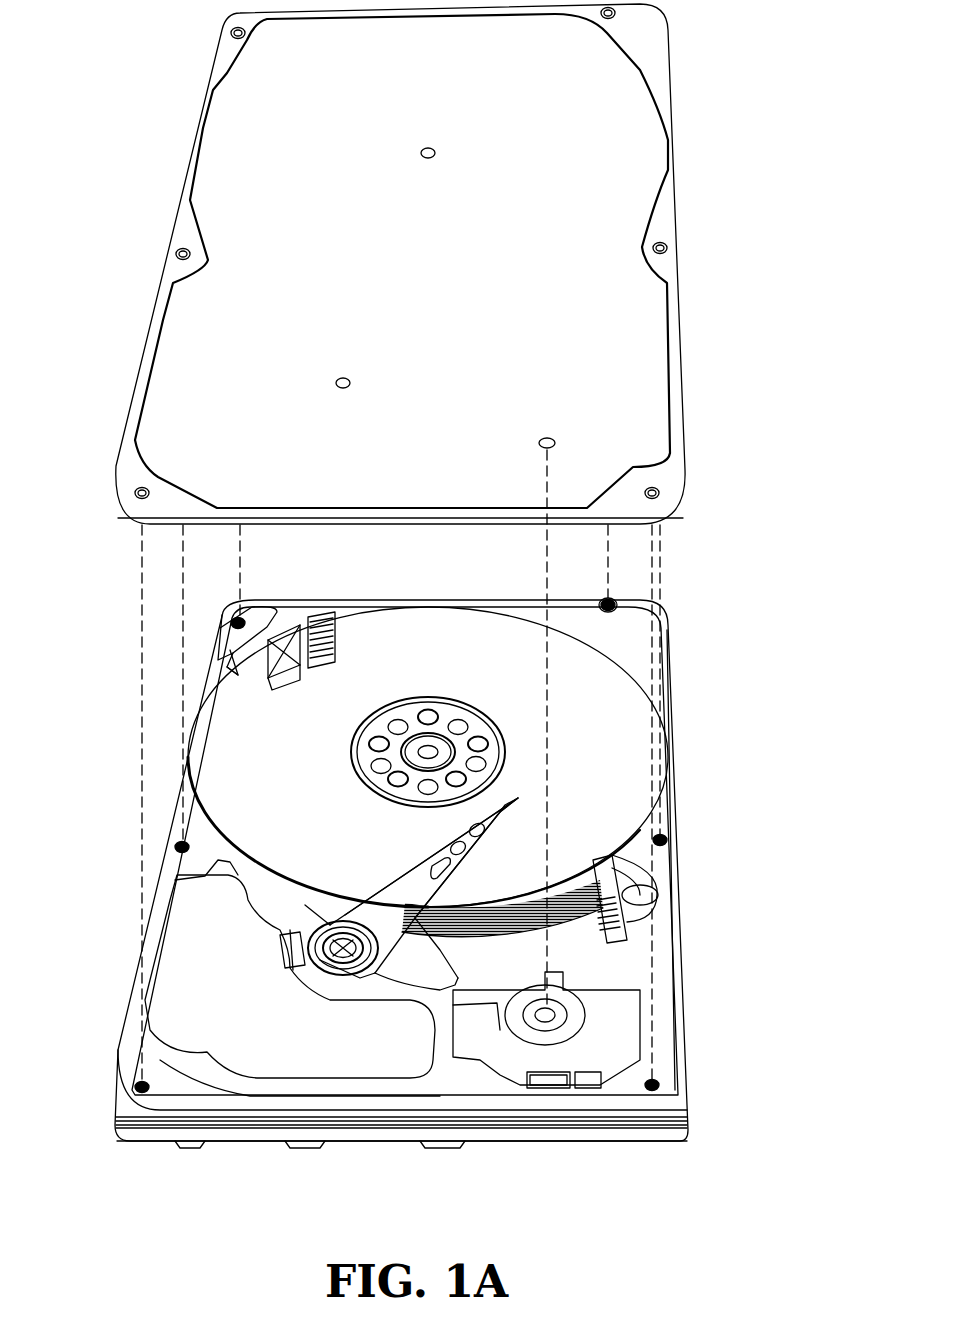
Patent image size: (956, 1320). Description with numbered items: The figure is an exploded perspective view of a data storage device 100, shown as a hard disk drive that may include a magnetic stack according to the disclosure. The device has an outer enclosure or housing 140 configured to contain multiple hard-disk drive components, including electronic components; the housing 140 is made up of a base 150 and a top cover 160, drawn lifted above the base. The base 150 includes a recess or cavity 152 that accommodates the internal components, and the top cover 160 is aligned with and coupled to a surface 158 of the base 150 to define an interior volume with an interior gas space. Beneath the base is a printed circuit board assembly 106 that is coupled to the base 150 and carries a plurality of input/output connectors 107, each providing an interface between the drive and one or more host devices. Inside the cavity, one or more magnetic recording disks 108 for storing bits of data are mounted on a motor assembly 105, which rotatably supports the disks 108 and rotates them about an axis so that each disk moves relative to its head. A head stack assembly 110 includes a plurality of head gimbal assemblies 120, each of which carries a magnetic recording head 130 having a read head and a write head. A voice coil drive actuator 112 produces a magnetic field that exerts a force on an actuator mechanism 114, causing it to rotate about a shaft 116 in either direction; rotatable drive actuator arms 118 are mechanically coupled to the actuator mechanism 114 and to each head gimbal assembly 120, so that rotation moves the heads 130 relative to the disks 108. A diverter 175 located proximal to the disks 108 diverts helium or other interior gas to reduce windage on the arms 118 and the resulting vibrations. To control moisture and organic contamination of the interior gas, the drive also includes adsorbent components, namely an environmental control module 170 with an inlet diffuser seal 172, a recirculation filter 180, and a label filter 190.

The data storage device 100 is at (140, 74).
The motor assembly 105 is at (356, 715).
The printed circuit board assembly 106 is at (256, 1150).
The input/output connectors 107 is at (290, 1145).
The magnetic recording disk 108 is at (616, 762).
The head stack assembly 110 is at (450, 952).
The voice coil drive actuator 112 is at (247, 1012).
The actuator mechanism 114 is at (290, 950).
The shaft 116 is at (343, 945).
The rotatable drive actuator arms 118 is at (400, 900).
The head gimbal assembly 120 is at (497, 815).
The magnetic recording head 130 is at (520, 799).
The housing 140 is at (698, 816).
The base 150 is at (128, 1035).
The recess 152 is at (203, 862).
The surface 158 is at (634, 624).
The top cover 160 is at (438, 280).
The environmental control module 170 is at (630, 1035).
The inlet diffuser seal 172 is at (522, 1028).
The diverter 175 is at (322, 616).
The recirculation filter 180 is at (275, 642).
The label filter 190 is at (548, 1096).